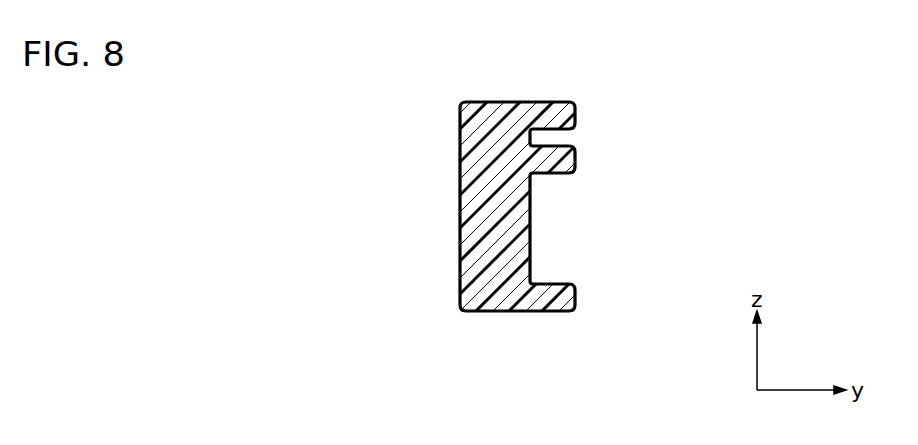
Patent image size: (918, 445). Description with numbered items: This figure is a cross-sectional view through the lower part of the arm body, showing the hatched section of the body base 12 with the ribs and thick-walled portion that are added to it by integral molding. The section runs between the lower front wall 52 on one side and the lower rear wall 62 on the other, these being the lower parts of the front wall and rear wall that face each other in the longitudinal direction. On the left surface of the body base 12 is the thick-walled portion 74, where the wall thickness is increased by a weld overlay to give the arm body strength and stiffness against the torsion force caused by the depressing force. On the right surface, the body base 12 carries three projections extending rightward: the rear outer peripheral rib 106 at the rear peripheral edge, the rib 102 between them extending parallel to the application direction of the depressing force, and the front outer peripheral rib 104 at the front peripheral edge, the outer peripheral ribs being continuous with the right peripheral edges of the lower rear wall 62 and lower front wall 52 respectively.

The body base 12 is at (520, 224).
The lower front wall 52 is at (506, 296).
The lower rear wall 62 is at (492, 110).
The thick-walled portion 74 is at (462, 215).
The rib 102 is at (565, 160).
The front outer peripheral rib 104 is at (565, 301).
The rear outer peripheral rib 106 is at (567, 111).